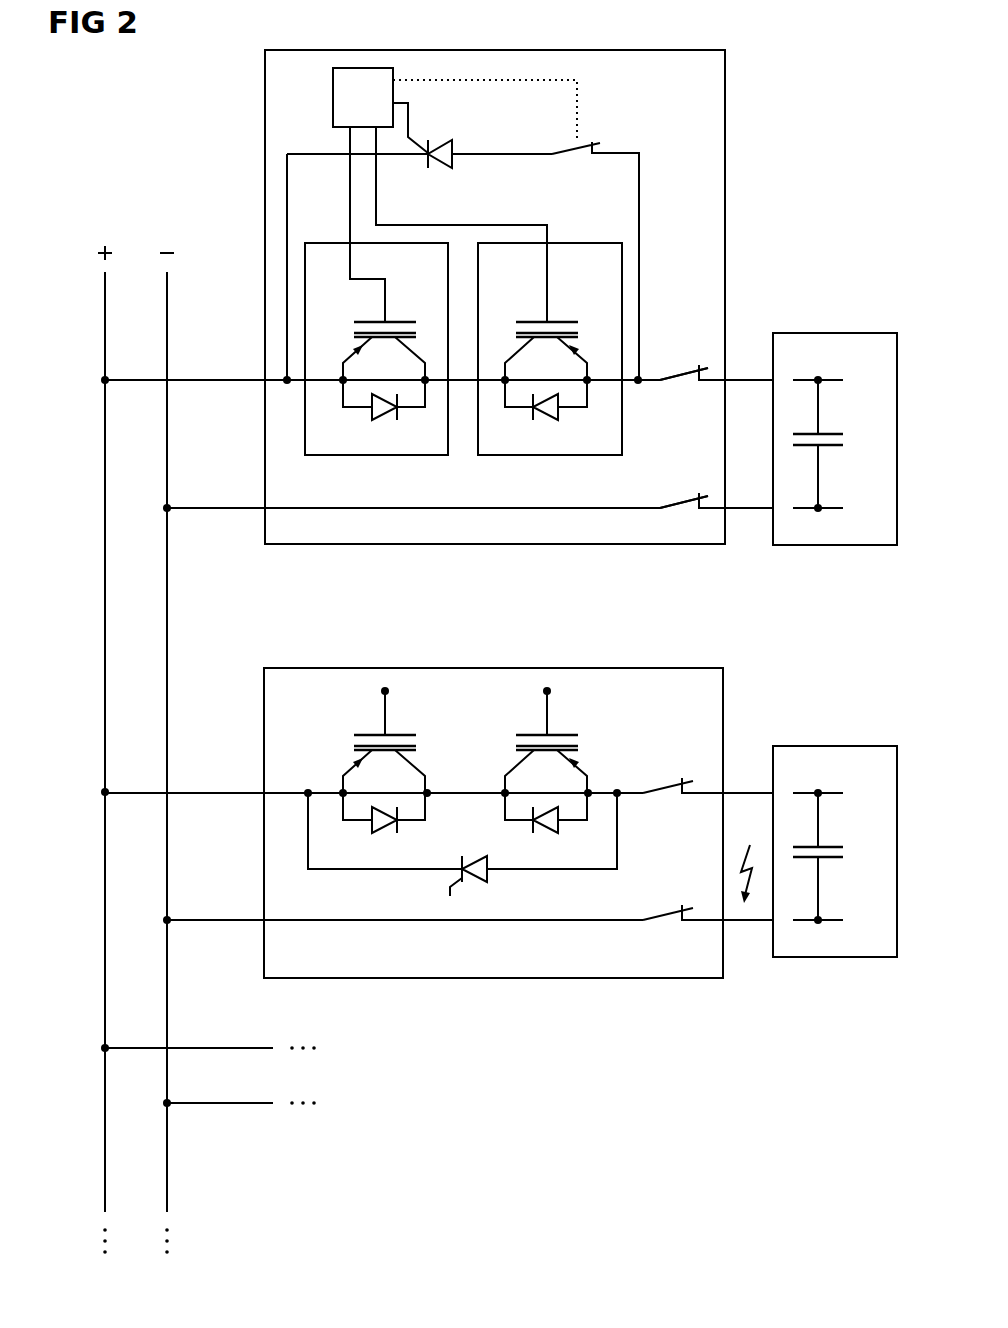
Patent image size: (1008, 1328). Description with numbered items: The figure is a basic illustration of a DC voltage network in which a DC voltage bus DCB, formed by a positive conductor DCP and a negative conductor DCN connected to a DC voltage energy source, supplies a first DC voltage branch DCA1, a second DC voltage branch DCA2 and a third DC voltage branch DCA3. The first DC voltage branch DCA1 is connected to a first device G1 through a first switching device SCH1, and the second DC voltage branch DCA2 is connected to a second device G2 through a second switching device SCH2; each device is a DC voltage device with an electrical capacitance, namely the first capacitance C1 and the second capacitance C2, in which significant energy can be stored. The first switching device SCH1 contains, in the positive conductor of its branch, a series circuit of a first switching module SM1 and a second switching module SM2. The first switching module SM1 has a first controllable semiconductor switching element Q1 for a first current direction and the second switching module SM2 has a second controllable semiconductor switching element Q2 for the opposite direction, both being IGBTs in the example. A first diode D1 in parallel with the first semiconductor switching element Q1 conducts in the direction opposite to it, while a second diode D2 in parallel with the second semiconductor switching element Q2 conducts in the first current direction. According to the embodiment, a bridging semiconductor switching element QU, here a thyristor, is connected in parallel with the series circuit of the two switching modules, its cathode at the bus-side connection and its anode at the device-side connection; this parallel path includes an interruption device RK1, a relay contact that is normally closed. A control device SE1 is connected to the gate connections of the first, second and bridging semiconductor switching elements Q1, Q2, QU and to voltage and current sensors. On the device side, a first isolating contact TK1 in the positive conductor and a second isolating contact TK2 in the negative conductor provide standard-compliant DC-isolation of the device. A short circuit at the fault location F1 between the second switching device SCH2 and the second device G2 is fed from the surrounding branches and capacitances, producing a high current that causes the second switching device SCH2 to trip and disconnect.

The DC voltage bus DCB is at (133, 187).
The positive conductor DCP is at (105, 578).
The negative conductor DCN is at (167, 585).
The first DC voltage branch DCA1 is at (439, 436).
The second DC voltage branch DCA2 is at (439, 849).
The third DC voltage branch DCA3 is at (250, 1075).
The first switching device SCH1 is at (725, 103).
The second switching device SCH2 is at (648, 668).
The control device SE1 is at (440, 195).
The interruption device RK1 is at (463, 230).
The bridging semiconductor switching element QU is at (419, 166).
The first switching module SM1 is at (318, 243).
The second switching module SM2 is at (583, 243).
The first semiconductor switching element Q1 is at (384, 324).
The second semiconductor switching element Q2 is at (546, 324).
The first diode D1 is at (387, 414).
The second diode D2 is at (550, 414).
The first isolating contact TK1 is at (678, 353).
The second isolating contact TK2 is at (678, 482).
The first device G1 is at (879, 333).
The second device G2 is at (880, 746).
The first capacitance C1 is at (836, 444).
The second capacitance C2 is at (836, 856).
The fault location F1 is at (751, 960).